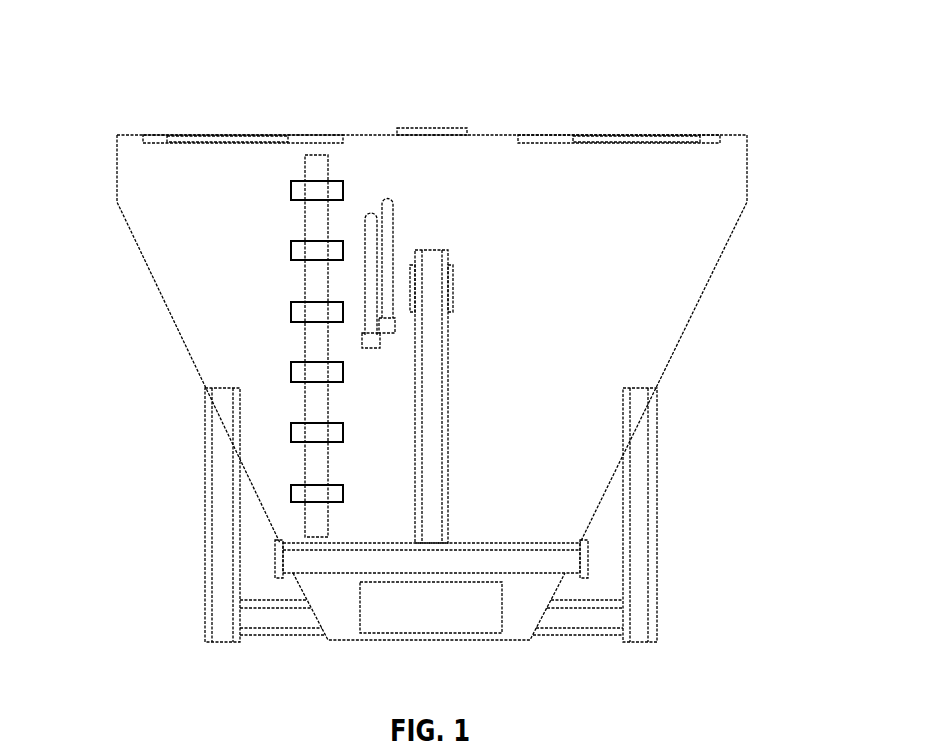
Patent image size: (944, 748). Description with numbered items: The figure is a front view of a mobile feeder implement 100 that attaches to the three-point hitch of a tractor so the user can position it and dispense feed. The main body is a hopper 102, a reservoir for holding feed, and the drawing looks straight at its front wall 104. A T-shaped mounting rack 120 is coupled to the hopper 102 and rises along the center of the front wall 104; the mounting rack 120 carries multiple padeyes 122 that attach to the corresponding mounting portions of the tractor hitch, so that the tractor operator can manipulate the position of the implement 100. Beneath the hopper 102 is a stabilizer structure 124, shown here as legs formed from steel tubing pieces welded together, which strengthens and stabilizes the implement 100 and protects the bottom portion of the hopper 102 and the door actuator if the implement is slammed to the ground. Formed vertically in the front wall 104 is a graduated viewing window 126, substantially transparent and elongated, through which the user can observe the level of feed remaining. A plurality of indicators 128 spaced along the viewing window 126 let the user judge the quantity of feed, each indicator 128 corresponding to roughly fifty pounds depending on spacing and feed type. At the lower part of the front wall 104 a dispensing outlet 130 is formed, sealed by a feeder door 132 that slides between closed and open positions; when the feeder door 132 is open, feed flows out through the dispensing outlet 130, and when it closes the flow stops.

The mobile feeder implement 100 is at (752, 36).
The hopper 102 is at (730, 246).
The front wall 104 is at (640, 232).
The T-shaped mounting rack 120 is at (458, 440).
The padeyes 122 is at (454, 289).
The stabilizer structure 124 is at (665, 601).
The graduated viewing window 126 is at (328, 222).
The indicators 128 is at (291, 190).
The dispensing outlet 130 is at (500, 627).
The feeder door 132 is at (455, 622).